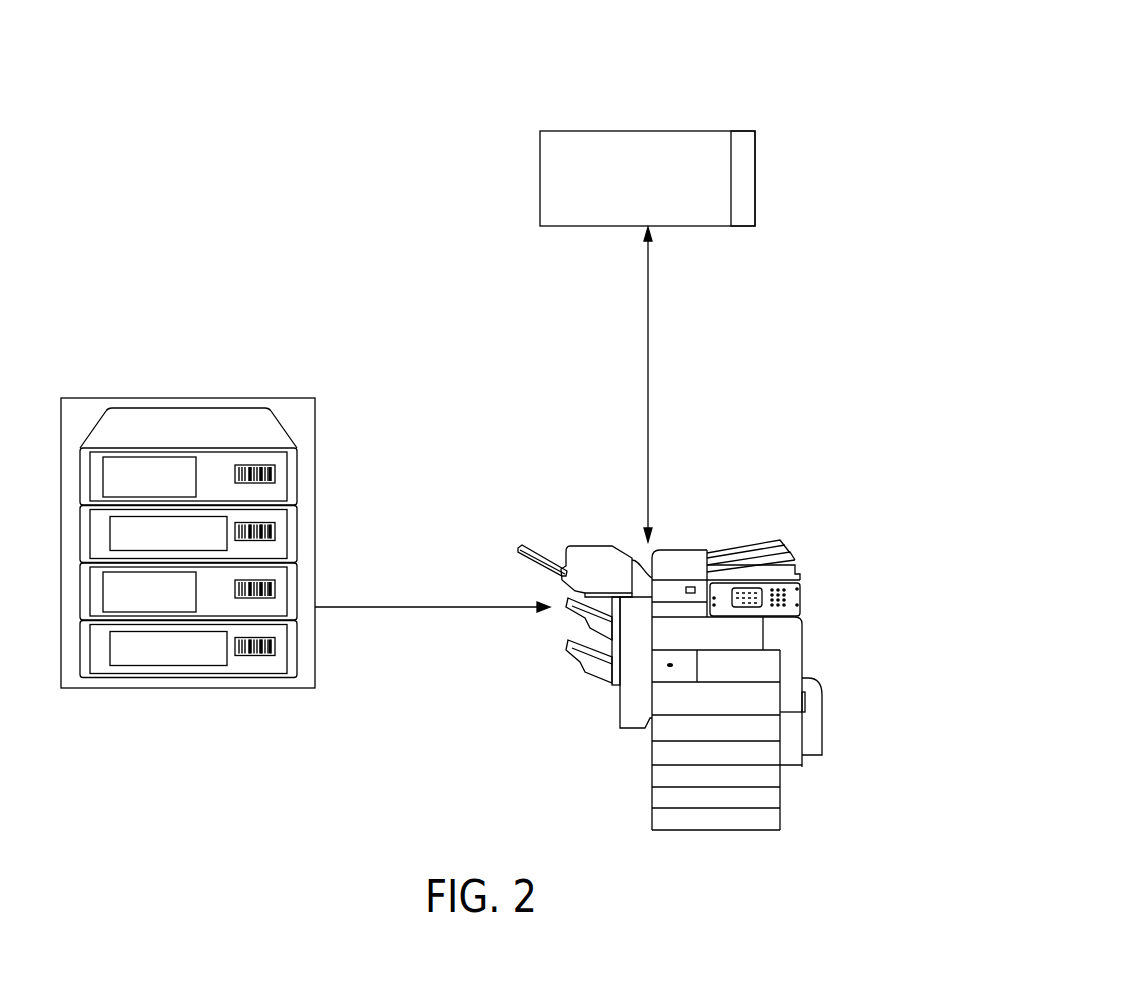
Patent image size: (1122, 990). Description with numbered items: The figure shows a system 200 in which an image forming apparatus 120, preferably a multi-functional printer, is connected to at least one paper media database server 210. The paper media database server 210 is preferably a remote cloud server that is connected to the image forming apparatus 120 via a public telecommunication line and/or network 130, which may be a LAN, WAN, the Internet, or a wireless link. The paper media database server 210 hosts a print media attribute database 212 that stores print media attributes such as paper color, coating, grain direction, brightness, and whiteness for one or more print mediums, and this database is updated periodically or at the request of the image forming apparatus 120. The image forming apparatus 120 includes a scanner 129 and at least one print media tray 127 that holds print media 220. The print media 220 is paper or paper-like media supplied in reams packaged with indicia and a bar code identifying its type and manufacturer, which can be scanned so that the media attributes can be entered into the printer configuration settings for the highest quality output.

The system 200 is at (807, 48).
The paper media database server 210 is at (700, 131).
The print media attribute database 212 is at (748, 194).
The network 130 is at (648, 350).
The image forming apparatus 120 is at (870, 620).
The scanner 129 is at (737, 548).
The print media tray 127 is at (797, 757).
The print media 220 is at (215, 688).